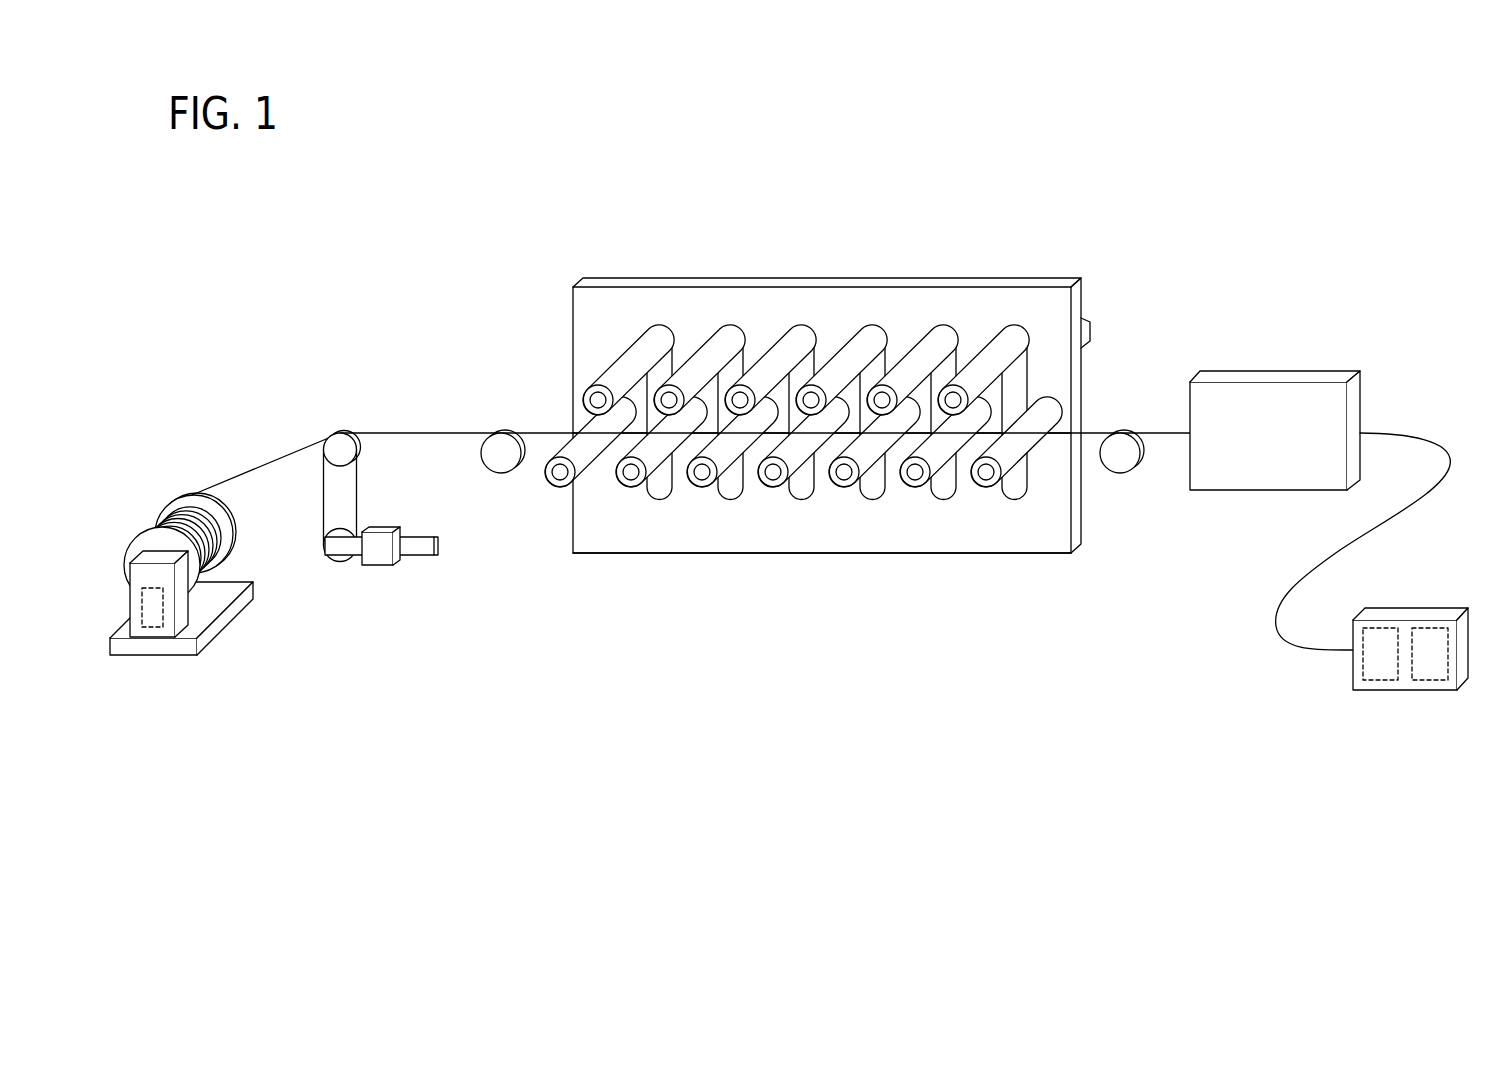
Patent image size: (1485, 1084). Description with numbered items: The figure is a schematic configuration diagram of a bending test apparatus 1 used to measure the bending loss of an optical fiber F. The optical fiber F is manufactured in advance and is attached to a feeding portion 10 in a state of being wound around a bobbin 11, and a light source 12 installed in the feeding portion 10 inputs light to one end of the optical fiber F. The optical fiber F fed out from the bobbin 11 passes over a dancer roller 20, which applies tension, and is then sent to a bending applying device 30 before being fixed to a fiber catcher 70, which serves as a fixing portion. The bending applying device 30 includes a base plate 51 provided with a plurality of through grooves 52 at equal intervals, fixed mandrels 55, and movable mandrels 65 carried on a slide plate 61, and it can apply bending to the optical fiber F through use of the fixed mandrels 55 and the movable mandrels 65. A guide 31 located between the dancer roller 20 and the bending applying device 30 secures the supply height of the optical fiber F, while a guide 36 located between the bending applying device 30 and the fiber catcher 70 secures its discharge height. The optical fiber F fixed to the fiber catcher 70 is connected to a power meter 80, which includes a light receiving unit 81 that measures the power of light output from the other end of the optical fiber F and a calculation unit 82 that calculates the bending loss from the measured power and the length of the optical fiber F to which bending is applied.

The bending test apparatus 1 is at (352, 262).
The feeding portion 10 is at (137, 502).
The bobbin 11 is at (241, 523).
The light source 12 is at (150, 630).
The optical fiber F is at (247, 471).
The dancer roller 20 is at (338, 421).
The bending applying device 30 is at (670, 261).
The guide 31 is at (502, 466).
The guide 36 is at (1122, 466).
The base plate 51 is at (912, 548).
The through grooves 52 is at (732, 496).
The fixed mandrels 55 is at (649, 481).
The slide plate 61 is at (1092, 311).
The movable mandrels 65 is at (1010, 343).
The fiber catcher 70 is at (1306, 356).
The power meter 80 is at (1401, 696).
The light receiving unit 81 is at (1380, 627).
The calculation unit 82 is at (1432, 627).